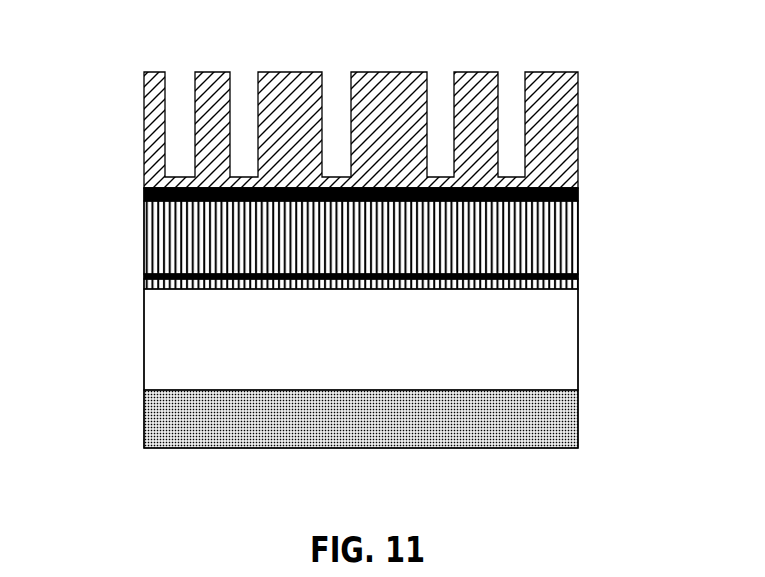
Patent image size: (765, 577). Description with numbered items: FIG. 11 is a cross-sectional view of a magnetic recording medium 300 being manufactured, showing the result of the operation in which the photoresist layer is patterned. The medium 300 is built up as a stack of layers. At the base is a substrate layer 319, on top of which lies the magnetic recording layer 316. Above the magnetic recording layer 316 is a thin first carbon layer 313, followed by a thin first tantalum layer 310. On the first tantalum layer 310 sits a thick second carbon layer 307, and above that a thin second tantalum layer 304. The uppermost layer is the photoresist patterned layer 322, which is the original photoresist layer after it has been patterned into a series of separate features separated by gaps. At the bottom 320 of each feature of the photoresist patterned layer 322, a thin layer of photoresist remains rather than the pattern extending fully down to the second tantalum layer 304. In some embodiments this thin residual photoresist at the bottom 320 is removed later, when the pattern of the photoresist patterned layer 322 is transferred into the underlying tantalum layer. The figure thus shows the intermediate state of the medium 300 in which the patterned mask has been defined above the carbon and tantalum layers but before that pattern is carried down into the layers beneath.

The magnetic recording medium 300 is at (361, 230).
The second tantalum layer 304 is at (144, 195).
The second carbon layer 307 is at (144, 245).
The first tantalum layer 310 is at (144, 280).
The first carbon layer 313 is at (578, 284).
The magnetic recording layer 316 is at (144, 341).
The substrate layer 319 is at (144, 422).
The bottom of each feature of photoresist patterned layer 320 is at (180, 142).
The photoresist patterned layer 322 is at (144, 137).